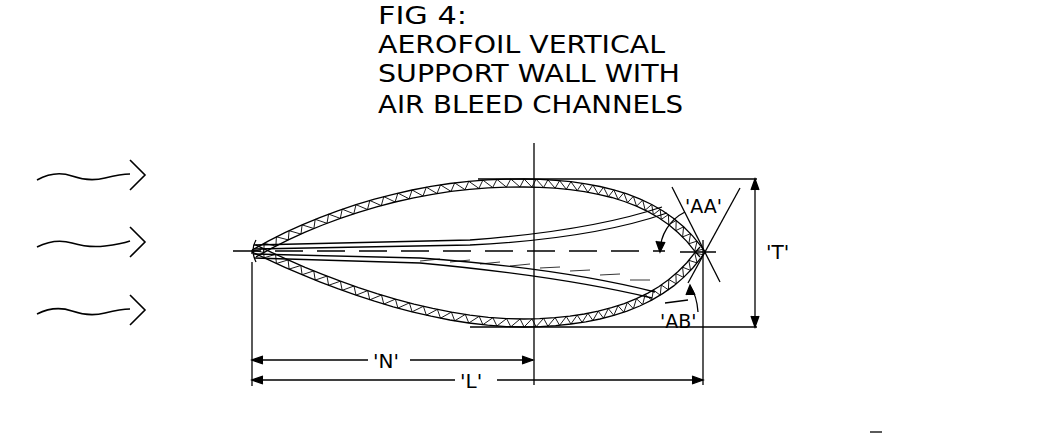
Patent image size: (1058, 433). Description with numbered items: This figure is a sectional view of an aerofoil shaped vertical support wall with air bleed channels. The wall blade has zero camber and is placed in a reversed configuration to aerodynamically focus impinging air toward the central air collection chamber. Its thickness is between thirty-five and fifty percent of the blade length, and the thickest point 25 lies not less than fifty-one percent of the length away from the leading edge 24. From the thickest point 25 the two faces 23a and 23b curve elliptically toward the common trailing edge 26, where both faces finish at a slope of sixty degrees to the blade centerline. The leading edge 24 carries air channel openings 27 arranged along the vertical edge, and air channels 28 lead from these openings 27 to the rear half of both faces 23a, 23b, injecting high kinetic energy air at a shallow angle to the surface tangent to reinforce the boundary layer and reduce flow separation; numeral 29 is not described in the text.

The wall blade face 23a is at (373, 303).
The wall blade face 23b is at (373, 200).
The leading edge 24 is at (253, 258).
The thickest point 25 is at (534, 331).
The trailing edge 26 is at (720, 250).
The air channel openings 27 is at (253, 243).
The air channels 28 is at (408, 246).
The aerofoil vertical support wall 29 is at (893, 428).